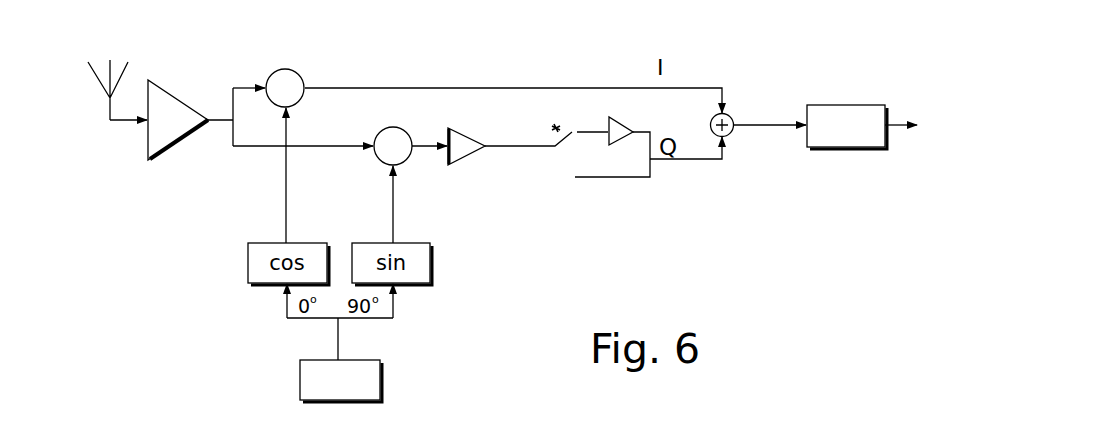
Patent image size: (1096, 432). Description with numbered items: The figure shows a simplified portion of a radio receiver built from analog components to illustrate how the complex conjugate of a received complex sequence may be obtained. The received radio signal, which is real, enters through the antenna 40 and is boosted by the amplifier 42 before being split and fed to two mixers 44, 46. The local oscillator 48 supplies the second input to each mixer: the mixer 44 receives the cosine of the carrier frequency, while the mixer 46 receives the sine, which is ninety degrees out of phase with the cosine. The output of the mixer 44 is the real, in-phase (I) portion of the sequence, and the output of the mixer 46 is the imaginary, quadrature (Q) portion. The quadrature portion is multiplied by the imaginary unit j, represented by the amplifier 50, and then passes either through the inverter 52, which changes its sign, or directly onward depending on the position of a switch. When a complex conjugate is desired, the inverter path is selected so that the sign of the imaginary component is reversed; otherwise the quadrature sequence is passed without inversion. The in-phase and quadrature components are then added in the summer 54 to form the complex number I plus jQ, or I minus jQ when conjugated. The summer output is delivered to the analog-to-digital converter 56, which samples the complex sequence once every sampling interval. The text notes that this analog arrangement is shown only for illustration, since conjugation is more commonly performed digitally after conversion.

The antenna 40 is at (98, 73).
The amplifier 42 is at (167, 84).
The mixer 44 is at (309, 77).
The mixer 46 is at (375, 164).
The local oscillator 48 is at (382, 372).
The amplifier 50 is at (458, 163).
The inverter 52 is at (625, 118).
The summer 54 is at (735, 133).
The analog-to-digital converter 56 is at (832, 105).